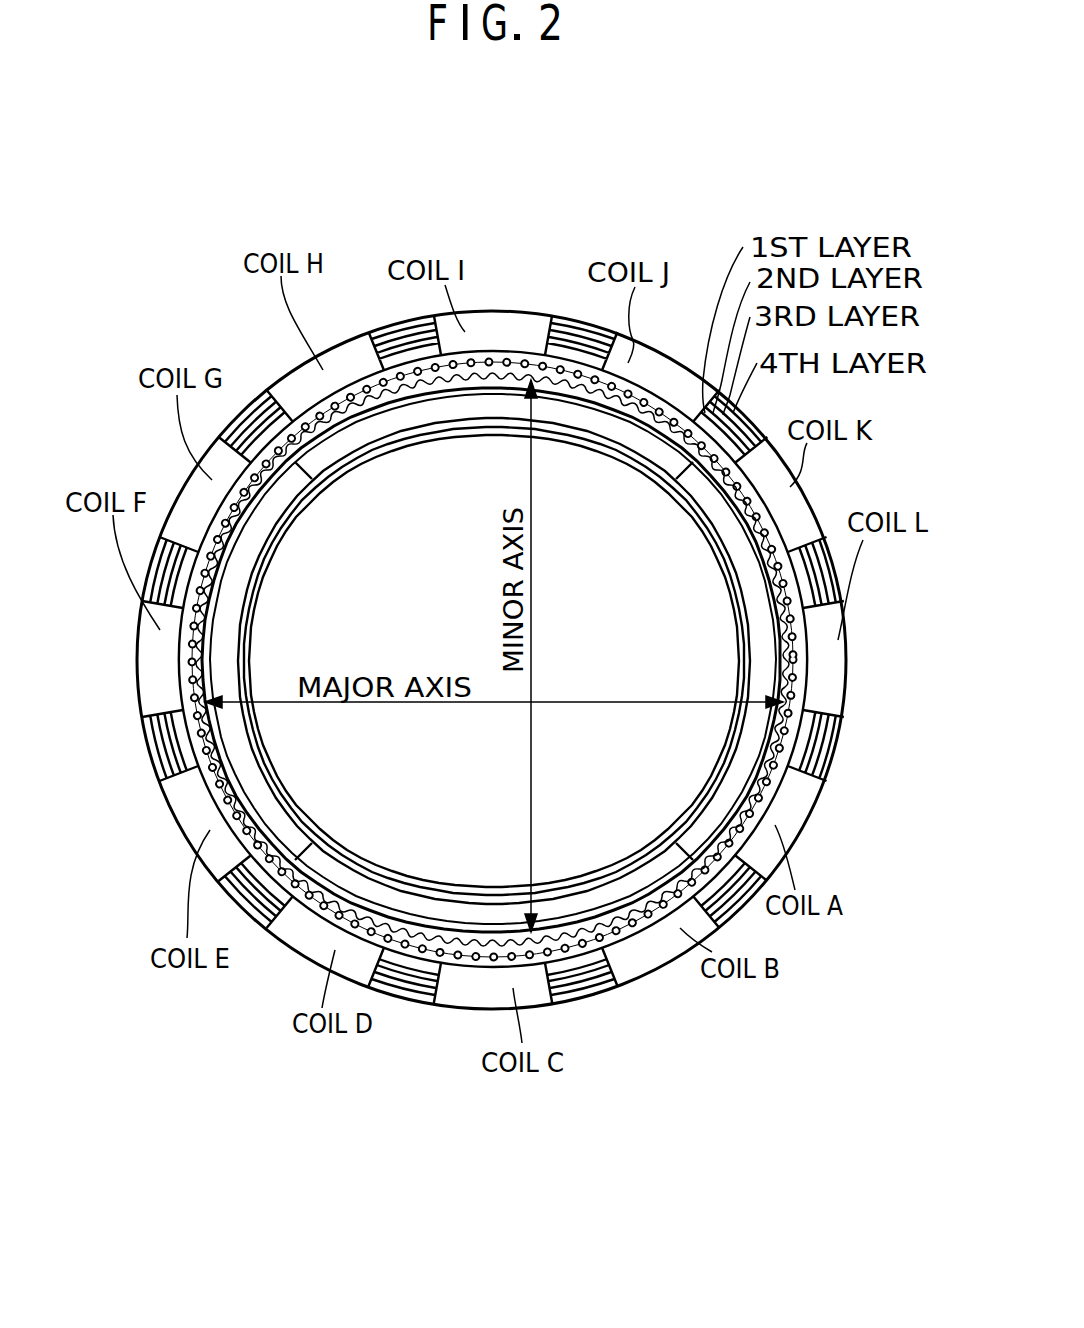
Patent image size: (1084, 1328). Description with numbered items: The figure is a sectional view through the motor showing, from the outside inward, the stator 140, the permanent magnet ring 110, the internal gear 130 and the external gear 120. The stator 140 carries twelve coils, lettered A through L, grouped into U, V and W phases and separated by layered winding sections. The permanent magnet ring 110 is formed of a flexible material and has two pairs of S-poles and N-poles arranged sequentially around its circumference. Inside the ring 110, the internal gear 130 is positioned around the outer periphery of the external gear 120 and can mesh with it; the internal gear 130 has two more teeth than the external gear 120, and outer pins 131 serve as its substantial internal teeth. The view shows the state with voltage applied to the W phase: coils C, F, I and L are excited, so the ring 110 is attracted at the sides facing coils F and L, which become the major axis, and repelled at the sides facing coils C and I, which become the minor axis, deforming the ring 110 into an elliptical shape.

The permanent magnet ring 110 is at (247, 762).
The external gear 120 is at (610, 928).
The internal gear 130 is at (468, 962).
The outer pins 131 is at (443, 958).
The stator 140 is at (535, 311).